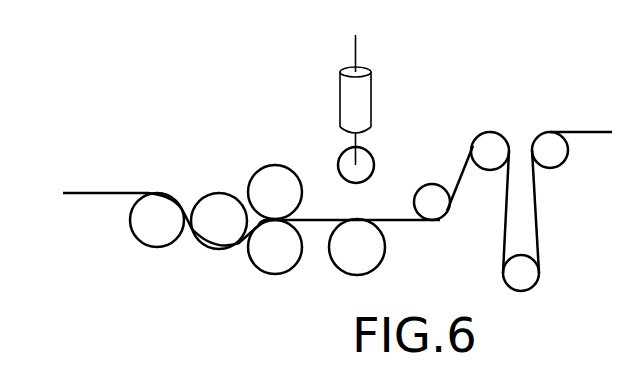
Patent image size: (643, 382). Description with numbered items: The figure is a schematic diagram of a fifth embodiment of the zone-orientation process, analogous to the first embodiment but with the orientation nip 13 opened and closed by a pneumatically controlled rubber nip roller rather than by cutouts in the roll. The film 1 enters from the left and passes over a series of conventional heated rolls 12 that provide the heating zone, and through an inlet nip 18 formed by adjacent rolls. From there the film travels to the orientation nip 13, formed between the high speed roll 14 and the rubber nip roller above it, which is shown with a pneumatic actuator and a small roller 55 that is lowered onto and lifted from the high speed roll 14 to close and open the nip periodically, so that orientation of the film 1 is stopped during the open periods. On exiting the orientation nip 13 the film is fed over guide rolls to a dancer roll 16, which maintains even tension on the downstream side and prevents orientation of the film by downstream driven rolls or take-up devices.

The film 1 is at (92, 180).
The heated rolls 12 is at (225, 200).
The inlet nip 18 is at (288, 185).
The orientation nip 13 is at (392, 88).
The applicator roller 55 is at (365, 162).
The high speed roll 14 is at (372, 252).
The dancer roll 16 is at (532, 277).